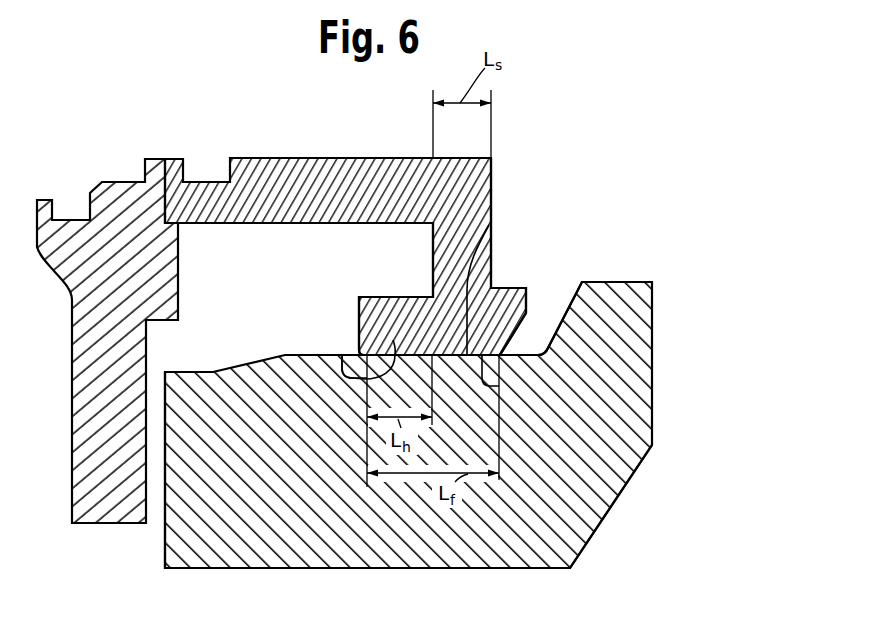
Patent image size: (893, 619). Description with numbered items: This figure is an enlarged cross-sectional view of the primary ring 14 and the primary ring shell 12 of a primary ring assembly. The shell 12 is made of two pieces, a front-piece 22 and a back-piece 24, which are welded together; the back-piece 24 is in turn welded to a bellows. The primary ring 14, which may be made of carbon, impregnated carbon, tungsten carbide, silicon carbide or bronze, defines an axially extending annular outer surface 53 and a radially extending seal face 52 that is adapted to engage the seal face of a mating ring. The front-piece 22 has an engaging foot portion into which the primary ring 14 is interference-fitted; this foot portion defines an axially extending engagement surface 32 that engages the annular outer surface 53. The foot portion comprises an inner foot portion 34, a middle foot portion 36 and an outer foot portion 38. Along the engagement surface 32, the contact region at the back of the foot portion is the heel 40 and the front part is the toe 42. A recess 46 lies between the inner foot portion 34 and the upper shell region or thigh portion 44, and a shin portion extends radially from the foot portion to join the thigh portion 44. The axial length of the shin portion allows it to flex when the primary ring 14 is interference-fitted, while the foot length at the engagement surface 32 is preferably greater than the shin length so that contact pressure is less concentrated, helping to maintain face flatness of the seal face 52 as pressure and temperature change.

The primary ring shell 12 is at (238, 158).
The primary ring 14 is at (622, 282).
The front-piece 22 is at (290, 158).
The back-piece 24 is at (116, 182).
The engagement surface 32 is at (502, 386).
The inner foot portion 34 is at (377, 297).
The middle foot portion 36 is at (476, 237).
The outer foot portion 38 is at (507, 288).
The heel 40 is at (342, 355).
The toe 42 is at (502, 358).
The thigh portion 44 is at (348, 158).
The recess 46 is at (492, 186).
The seal face 52 is at (652, 299).
The annular outer surface 53 is at (393, 340).